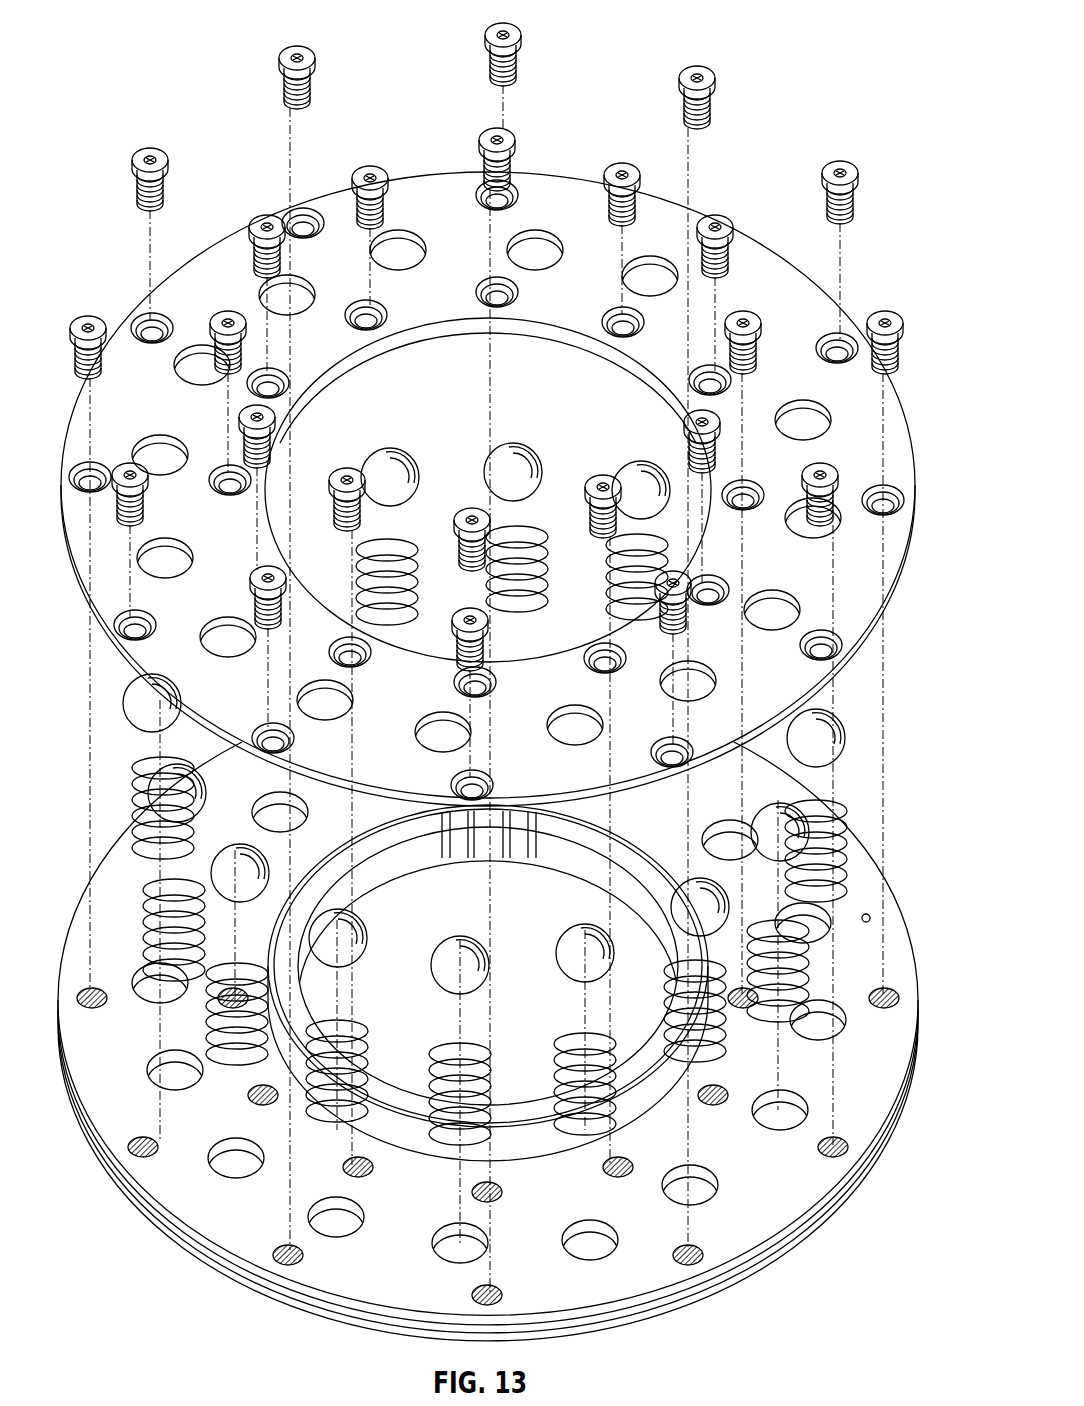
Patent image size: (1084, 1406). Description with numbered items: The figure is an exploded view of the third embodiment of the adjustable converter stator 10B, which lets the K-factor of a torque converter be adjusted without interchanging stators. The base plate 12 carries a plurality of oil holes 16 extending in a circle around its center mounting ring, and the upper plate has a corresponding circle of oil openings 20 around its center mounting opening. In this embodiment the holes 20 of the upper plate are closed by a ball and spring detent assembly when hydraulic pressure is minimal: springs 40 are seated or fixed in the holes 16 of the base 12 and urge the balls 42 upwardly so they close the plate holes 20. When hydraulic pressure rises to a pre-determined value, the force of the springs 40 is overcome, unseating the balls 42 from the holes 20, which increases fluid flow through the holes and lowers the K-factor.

The stator 10B is at (133, 131).
The base plate 12 is at (887, 930).
The oil holes 16 is at (342, 1240).
The oil openings 20 is at (353, 690).
The springs 40 is at (367, 1027).
The balls 42 is at (357, 930).